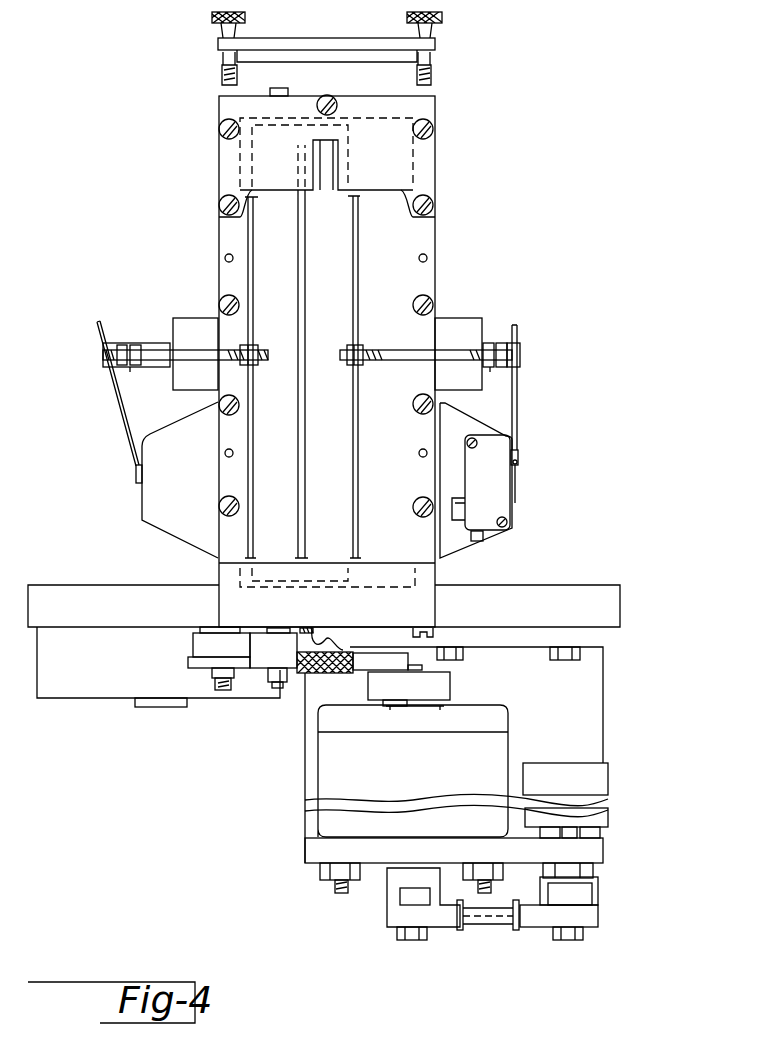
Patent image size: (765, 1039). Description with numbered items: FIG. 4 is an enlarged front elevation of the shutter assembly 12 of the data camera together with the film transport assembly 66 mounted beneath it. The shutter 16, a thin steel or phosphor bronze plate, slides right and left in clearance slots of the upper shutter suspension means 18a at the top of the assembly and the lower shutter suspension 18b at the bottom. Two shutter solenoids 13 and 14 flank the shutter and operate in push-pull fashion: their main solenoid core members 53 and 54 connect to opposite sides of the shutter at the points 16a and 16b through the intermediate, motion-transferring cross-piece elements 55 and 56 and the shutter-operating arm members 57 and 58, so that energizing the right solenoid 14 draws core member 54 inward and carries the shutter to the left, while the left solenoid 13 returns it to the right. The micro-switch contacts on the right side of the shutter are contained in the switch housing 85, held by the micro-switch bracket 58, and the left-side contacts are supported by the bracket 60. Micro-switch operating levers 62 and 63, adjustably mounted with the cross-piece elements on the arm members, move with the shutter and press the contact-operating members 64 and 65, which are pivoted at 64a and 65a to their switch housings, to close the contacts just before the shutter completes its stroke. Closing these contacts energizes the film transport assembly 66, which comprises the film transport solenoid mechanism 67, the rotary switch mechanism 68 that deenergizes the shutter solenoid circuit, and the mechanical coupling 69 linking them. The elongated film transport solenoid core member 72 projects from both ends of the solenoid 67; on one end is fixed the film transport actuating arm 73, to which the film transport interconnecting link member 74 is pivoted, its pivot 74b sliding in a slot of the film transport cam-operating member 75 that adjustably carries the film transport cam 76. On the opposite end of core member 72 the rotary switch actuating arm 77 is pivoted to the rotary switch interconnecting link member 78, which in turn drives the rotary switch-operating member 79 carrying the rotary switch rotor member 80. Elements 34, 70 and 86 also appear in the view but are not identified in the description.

The shutter assembly 12 is at (450, 190).
The shutter solenoid 13 is at (188, 318).
The shutter solenoid 14 is at (457, 318).
The shutter 16 is at (265, 235).
The interconnection point 16a is at (258, 347).
The interconnection point 16b is at (362, 348).
The shutter suspension means 18a is at (220, 155).
The lower shutter suspension 18b is at (437, 578).
The clamp bar with knurled screws 34 is at (347, 48).
The main solenoid core member 53 is at (150, 343).
The main solenoid core member 54 is at (521, 350).
The intermediate motion-transferring cross-piece element 55 is at (135, 367).
The intermediate motion-transferring cross-piece element 56 is at (488, 367).
The shutter-operating arm member 57 is at (200, 350).
The shutter-operating arm member 58 is at (394, 350).
The micro-switch bracket 60 is at (198, 490).
The micro-switch operating lever 62 is at (491, 343).
The micro-switch operating lever 63 is at (125, 345).
The micro-switch contact-operating member 64 is at (519, 392).
The pivot 64a is at (519, 462).
The contact-operating member 65 is at (117, 410).
The pivot 65a is at (135, 470).
The film transport assembly 66 is at (610, 693).
The film transport solenoid mechanism 67 is at (380, 770).
The rotary switch mechanism 68 is at (600, 774).
The mechanical coupling 69 is at (530, 907).
The bottom plate 70 is at (318, 849).
The film transport solenoid core member 72 is at (406, 706).
The film transport actuating arm 73 is at (450, 682).
The film transport interconnecting link member 74 is at (382, 665).
The pivot 74b is at (207, 678).
The film transport cam-operating member 75 is at (197, 645).
The film transport cam 76 is at (286, 630).
The rotary switch actuating arm 77 is at (436, 882).
The rotary switch interconnecting link member 78 is at (486, 920).
The rotary switch-operating member 79 is at (600, 887).
The rotary switch rotor member 80 is at (606, 899).
The switch housing 85 is at (493, 490).
The right housing 86 is at (447, 426).